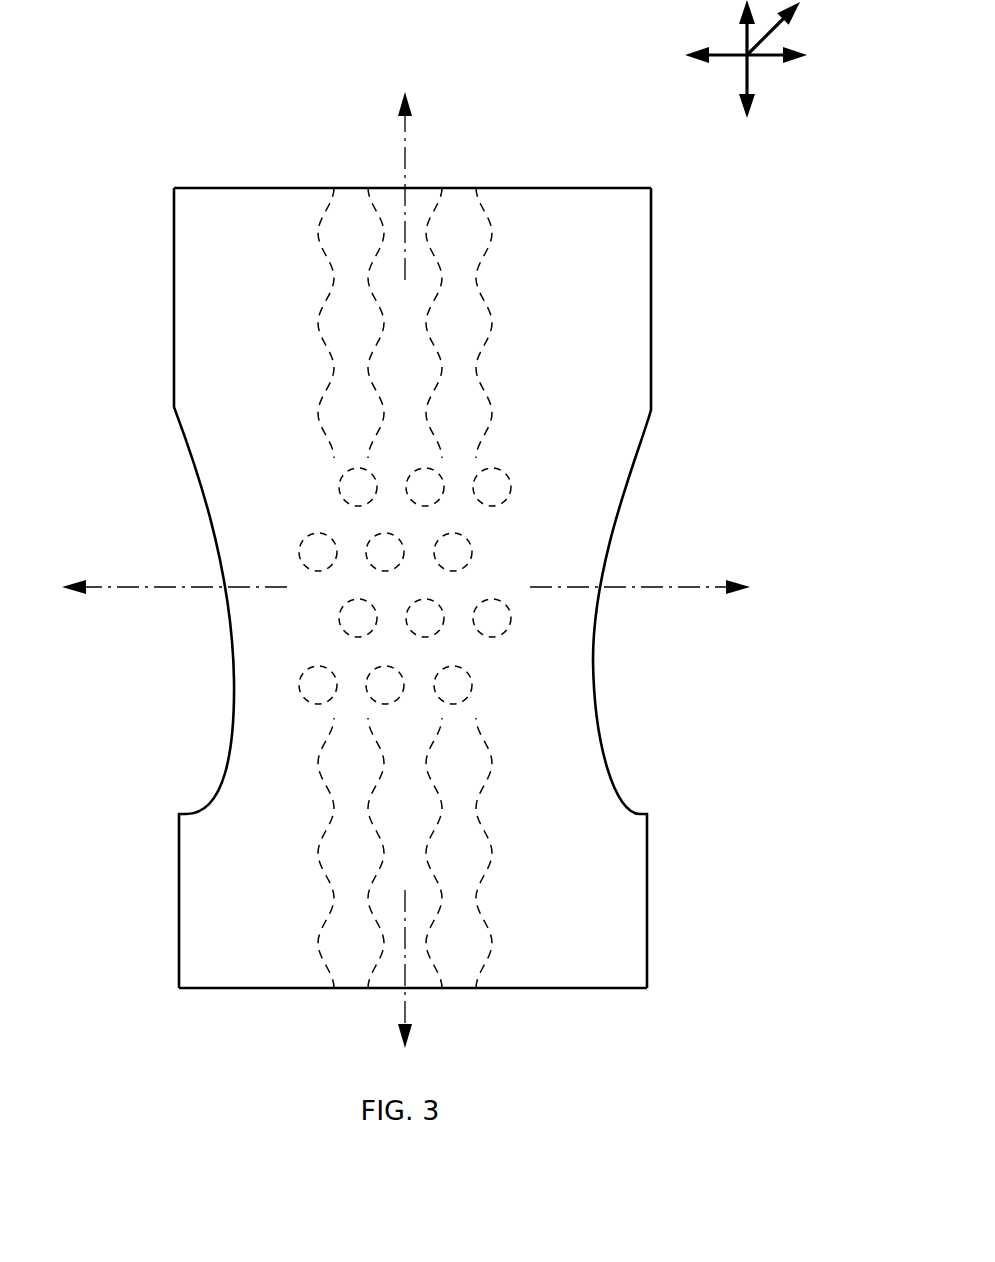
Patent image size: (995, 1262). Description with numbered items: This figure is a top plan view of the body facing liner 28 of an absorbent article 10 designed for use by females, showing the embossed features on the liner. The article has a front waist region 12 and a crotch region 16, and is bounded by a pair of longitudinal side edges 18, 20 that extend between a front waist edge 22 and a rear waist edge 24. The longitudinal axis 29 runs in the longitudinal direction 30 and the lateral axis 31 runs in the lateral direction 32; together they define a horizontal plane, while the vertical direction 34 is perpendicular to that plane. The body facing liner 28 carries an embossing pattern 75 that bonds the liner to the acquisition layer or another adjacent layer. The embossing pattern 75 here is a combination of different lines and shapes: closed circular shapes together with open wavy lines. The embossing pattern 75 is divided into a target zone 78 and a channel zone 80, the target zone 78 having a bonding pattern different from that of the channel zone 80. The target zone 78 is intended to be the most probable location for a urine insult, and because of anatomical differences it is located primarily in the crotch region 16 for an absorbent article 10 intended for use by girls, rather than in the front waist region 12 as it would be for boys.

The absorbent article 10 is at (440, 595).
The front waist region 12 is at (697, 935).
The crotch region 16 is at (680, 652).
The longitudinal side edge 18 is at (231, 745).
The longitudinal side edge 20 is at (600, 730).
The front waist edge 22 is at (565, 988).
The rear waist edge 24 is at (232, 188).
The body facing liner 28 is at (253, 297).
The longitudinal axis 29 is at (405, 160).
The longitudinal direction 30 is at (742, 34).
The lateral axis 31 is at (98, 587).
The lateral direction 32 is at (755, 60).
The vertical direction 34 is at (775, 40).
The embossing pattern 75 is at (354, 118).
The target zone 78 is at (680, 512).
The channel zone 80 is at (705, 260).